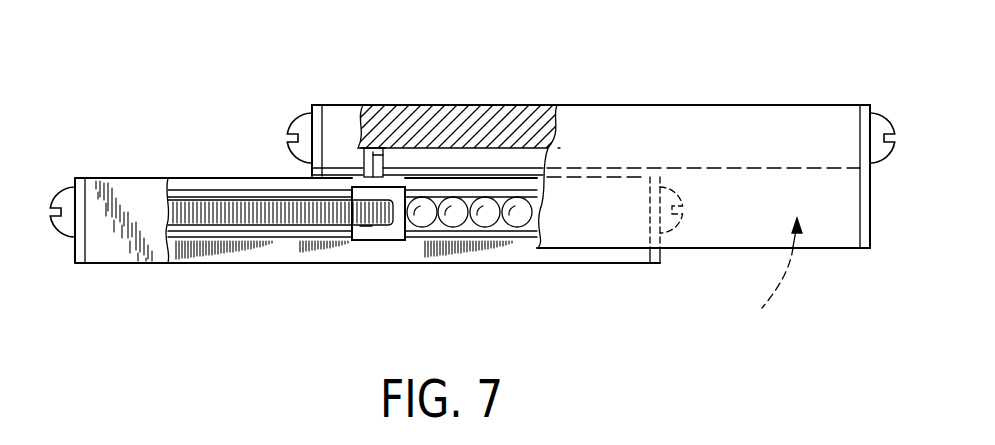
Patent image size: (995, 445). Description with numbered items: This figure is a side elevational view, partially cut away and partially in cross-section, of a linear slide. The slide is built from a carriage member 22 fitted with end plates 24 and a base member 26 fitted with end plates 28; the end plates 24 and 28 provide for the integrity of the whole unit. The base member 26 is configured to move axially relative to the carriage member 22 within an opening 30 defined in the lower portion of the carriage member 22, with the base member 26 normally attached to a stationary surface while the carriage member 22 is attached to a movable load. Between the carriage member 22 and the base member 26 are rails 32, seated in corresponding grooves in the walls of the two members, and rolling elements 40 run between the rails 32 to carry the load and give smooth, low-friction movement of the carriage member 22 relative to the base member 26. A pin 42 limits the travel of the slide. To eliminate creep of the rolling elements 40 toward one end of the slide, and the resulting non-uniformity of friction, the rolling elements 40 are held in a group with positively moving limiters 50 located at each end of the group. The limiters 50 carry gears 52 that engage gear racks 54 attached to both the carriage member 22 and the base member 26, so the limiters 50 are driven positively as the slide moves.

The carriage member 22 is at (483, 125).
The end plates 24 is at (312, 114).
The base member 26 is at (180, 257).
The end plates 28 is at (75, 253).
The opening 30 is at (760, 279).
The rails 32 is at (500, 218).
The rolling elements 40 is at (420, 212).
The pin 42 is at (390, 152).
The limiters 50 is at (395, 240).
The gears 52 is at (366, 226).
The gear racks 54 is at (267, 207).